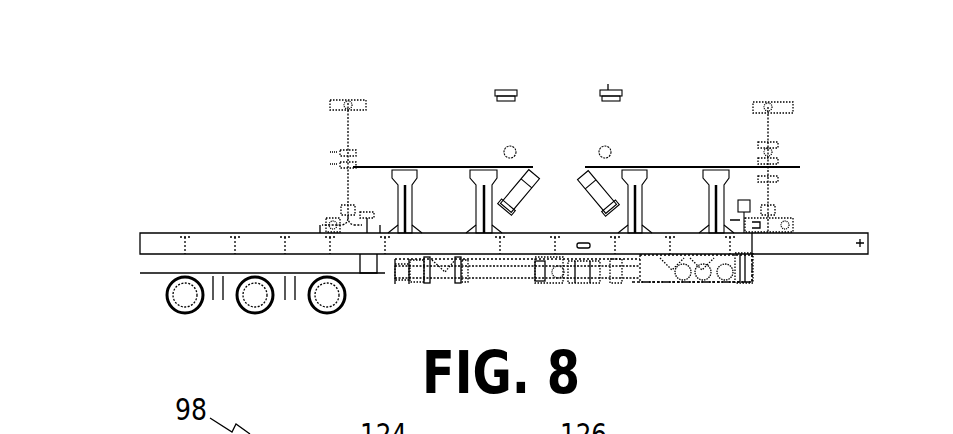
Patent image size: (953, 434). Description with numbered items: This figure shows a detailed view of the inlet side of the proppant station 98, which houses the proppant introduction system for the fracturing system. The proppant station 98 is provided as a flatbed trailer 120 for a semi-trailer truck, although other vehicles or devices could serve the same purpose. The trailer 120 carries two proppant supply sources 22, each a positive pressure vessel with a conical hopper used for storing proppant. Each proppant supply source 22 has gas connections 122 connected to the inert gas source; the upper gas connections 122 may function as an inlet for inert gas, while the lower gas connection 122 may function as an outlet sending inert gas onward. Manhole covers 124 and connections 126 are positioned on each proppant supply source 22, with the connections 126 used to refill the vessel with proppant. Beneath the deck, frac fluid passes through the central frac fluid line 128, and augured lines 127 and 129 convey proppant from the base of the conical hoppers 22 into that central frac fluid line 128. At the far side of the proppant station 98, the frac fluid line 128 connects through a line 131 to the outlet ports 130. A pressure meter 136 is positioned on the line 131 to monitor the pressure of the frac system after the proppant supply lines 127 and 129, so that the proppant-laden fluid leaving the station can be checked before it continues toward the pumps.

The proppant station 98 is at (497, 229).
The proppant supply source 22 is at (598, 129).
The flatbed trailer 120 is at (843, 250).
The gas connection 122 is at (333, 107).
The manhole cover 124 is at (530, 195).
The connection 126 is at (608, 90).
The augured line 127 is at (642, 265).
The central frac fluid line 128 is at (557, 267).
The augured line 129 is at (450, 273).
The outlet port 130 is at (727, 278).
The line 131 is at (593, 270).
The pressure meter 136 is at (617, 273).